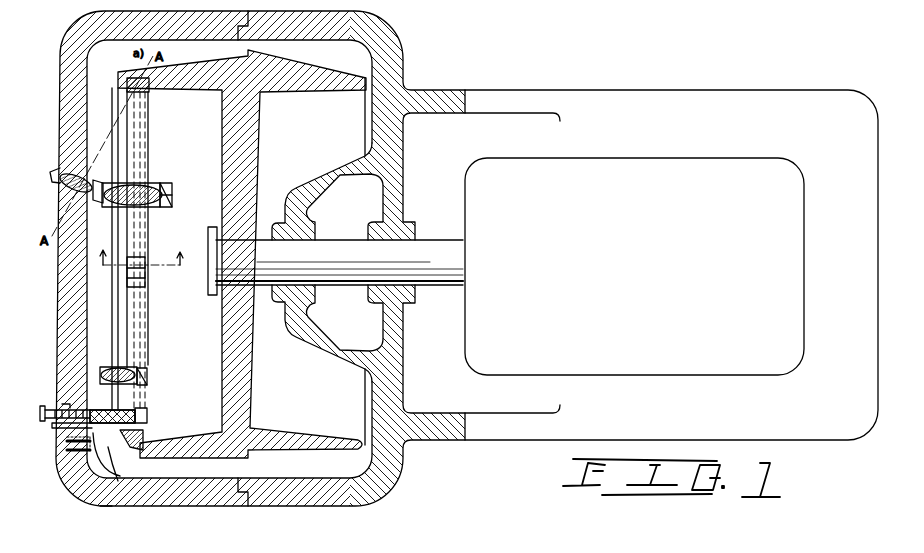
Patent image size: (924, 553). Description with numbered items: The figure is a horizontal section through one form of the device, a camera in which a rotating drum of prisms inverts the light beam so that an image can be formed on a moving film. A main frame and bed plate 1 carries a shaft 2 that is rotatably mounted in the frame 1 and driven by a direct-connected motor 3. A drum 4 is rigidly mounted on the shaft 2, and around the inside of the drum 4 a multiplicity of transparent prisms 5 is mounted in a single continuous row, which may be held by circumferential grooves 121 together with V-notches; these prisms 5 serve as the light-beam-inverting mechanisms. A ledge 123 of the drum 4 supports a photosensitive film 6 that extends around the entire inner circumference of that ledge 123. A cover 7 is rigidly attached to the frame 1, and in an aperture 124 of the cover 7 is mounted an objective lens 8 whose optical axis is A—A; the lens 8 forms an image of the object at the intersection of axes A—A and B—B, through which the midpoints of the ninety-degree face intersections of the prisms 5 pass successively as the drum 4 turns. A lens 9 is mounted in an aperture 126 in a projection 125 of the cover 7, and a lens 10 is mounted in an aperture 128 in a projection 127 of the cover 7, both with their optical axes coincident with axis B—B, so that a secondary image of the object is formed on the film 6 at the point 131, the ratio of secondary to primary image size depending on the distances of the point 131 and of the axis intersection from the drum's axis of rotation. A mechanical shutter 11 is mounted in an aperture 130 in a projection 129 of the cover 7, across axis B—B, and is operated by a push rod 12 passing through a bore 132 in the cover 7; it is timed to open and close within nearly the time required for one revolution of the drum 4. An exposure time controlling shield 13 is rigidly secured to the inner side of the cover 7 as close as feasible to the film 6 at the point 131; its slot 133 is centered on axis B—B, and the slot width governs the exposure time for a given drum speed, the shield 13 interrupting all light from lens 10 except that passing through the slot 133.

The main frame and bed plate 1 is at (402, 57).
The shaft 2 is at (437, 242).
The direct-connected motor 3 is at (687, 168).
The drum 4 is at (325, 73).
The prisms 5 is at (146, 279).
The photosensitive film 6 is at (137, 130).
The cover 7 is at (60, 66).
The objective lens 8 is at (68, 192).
The lens 9 is at (154, 188).
The lens 10 is at (113, 368).
The mechanical shutter 11 is at (106, 411).
The push rod 12 is at (60, 405).
The exposure time controlling shield 13 is at (89, 443).
The circumferential grooves 121 is at (134, 446).
The ledge 123 is at (127, 85).
The aperture 124 is at (80, 158).
The projection 125 is at (170, 200).
The aperture 126 is at (161, 208).
The projection 127 is at (139, 375).
The aperture 128 is at (147, 382).
The projection 129 is at (143, 410).
The aperture 130 is at (90, 428).
The point 131 is at (104, 505).
The bore 132 is at (70, 412).
The slot 133 is at (90, 467).